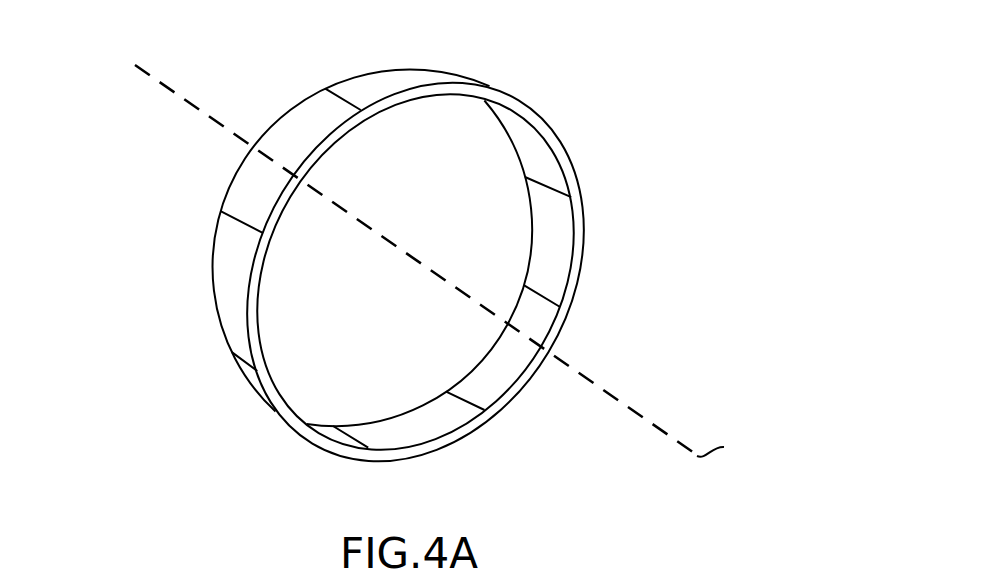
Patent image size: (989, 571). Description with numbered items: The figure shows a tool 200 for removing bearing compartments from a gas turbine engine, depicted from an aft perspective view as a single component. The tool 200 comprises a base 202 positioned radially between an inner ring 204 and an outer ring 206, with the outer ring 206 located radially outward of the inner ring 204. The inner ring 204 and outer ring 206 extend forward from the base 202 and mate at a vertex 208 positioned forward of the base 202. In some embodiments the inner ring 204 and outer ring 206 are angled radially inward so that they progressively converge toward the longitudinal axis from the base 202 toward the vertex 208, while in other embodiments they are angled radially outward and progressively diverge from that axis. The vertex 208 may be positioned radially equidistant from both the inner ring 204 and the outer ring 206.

The tool 200 is at (126, 33).
The base 202 is at (485, 101).
The inner ring 204 is at (550, 178).
The outer ring 206 is at (552, 138).
The vertex 208 is at (397, 71).